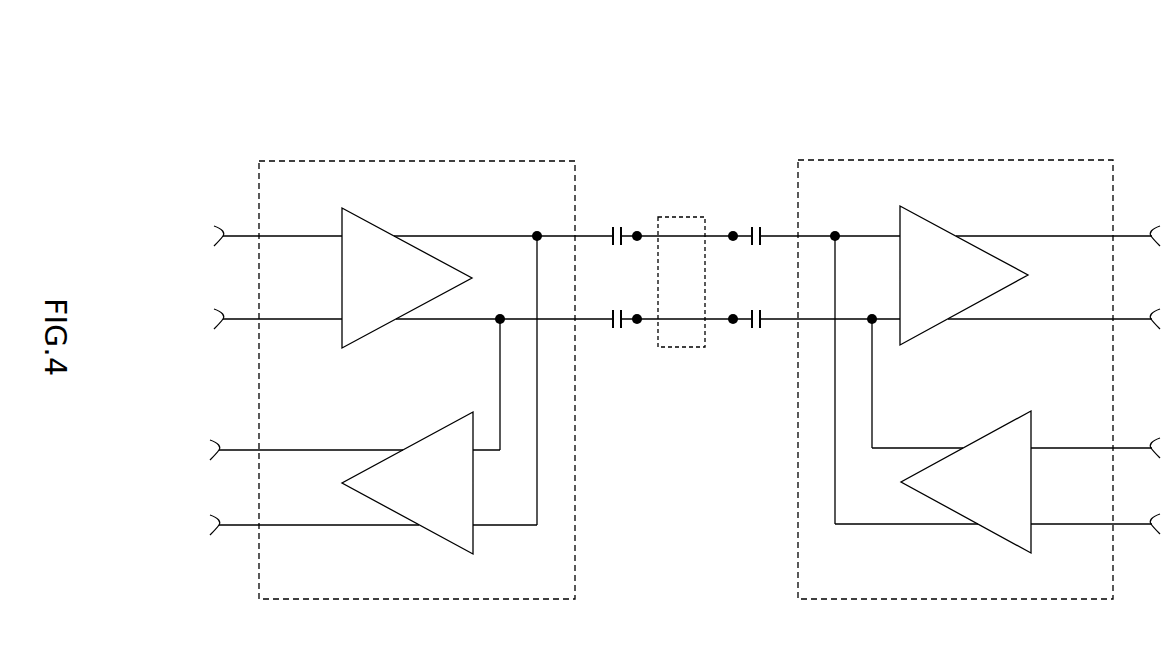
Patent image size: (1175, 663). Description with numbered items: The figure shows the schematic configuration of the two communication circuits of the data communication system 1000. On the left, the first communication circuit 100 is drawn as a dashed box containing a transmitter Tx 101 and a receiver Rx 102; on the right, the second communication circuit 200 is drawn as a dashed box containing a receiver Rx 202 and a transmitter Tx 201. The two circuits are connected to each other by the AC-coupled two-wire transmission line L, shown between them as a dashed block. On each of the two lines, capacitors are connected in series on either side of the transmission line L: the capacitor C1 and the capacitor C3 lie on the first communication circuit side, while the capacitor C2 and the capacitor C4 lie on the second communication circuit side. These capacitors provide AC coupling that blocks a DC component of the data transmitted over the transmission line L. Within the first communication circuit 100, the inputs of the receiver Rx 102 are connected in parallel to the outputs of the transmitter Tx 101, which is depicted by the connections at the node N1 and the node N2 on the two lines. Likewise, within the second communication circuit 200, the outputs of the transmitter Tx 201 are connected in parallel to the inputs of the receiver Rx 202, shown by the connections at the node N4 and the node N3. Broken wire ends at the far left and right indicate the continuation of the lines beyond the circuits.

The data communication system 1000 is at (690, 67).
The first communication circuit 100 is at (320, 160).
The second communication circuit 200 is at (850, 160).
The transmitter Tx 101 is at (381, 229).
The receiver Rx 102 is at (426, 437).
The transmitter Tx 201 is at (1003, 430).
The receiver Rx 202 is at (939, 229).
The capacitor C1 is at (623, 224).
The capacitor C2 is at (747, 224).
The capacitor C3 is at (623, 334).
The capacitor C4 is at (747, 334).
The transmission line L is at (681, 216).
The node N1 is at (549, 356).
The node N2 is at (531, 364).
The node N3 is at (841, 368).
The node N4 is at (821, 361).